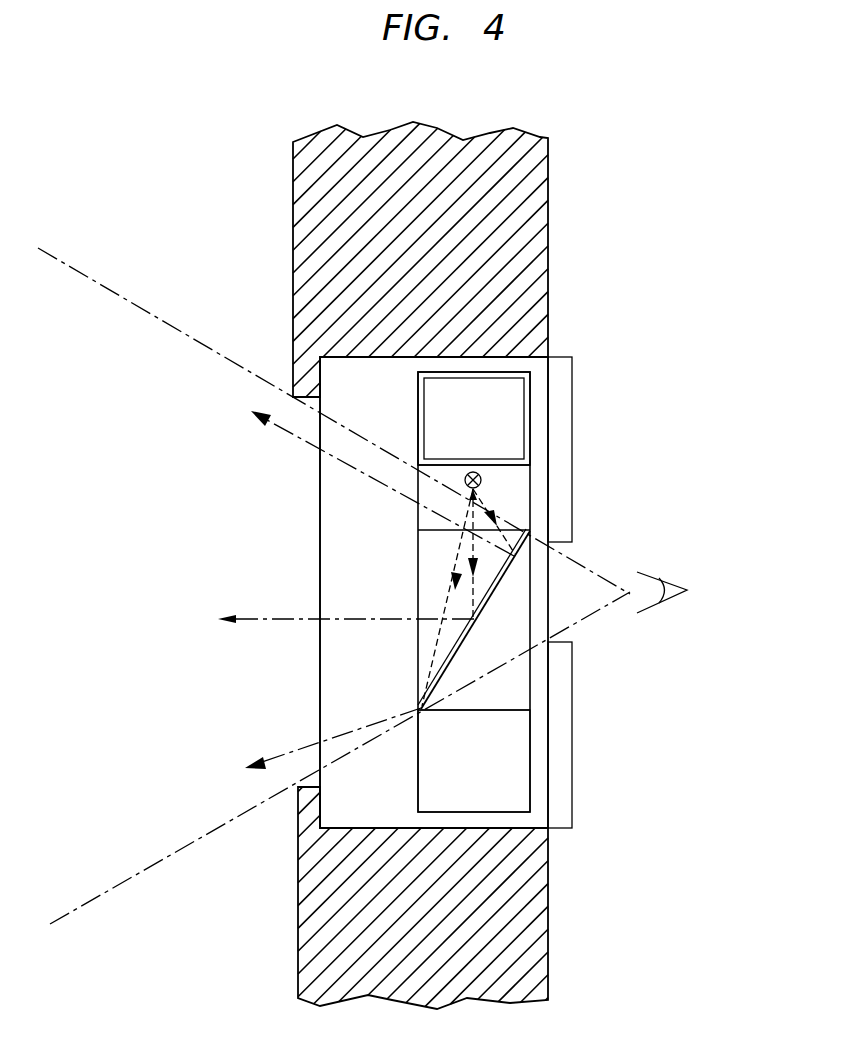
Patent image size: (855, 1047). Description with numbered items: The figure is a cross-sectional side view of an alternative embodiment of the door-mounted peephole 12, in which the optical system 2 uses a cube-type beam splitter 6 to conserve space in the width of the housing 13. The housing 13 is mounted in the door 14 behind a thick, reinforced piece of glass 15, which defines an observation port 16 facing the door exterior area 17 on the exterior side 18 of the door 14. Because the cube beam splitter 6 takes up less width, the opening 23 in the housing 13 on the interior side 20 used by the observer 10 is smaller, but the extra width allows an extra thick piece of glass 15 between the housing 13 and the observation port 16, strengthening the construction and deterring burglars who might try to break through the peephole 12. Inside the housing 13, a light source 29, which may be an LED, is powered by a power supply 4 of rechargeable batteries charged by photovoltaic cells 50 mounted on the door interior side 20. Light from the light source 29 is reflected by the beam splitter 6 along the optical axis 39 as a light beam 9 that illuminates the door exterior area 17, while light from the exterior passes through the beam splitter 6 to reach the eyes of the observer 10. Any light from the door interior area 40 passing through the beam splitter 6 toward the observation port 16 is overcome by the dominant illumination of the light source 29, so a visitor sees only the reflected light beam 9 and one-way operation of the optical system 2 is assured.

The optical system 2 is at (400, 540).
The power supply 4 is at (527, 390).
The beam splitter 6 is at (523, 690).
The light beam 9 is at (297, 437).
The observer 10 is at (650, 577).
The peephole 12 is at (669, 268).
The housing 13 is at (538, 445).
The door 14 is at (535, 216).
The glass 15 is at (343, 372).
The observation port 16 is at (224, 376).
The door exterior area 17 is at (20, 436).
The exterior side 18 is at (293, 245).
The interior side 20 is at (548, 166).
The opening 23 is at (592, 638).
The light source 29 is at (482, 480).
The optical axis 39 is at (290, 618).
The door interior area 40 is at (777, 532).
The photovoltaic cells 50 is at (573, 402).